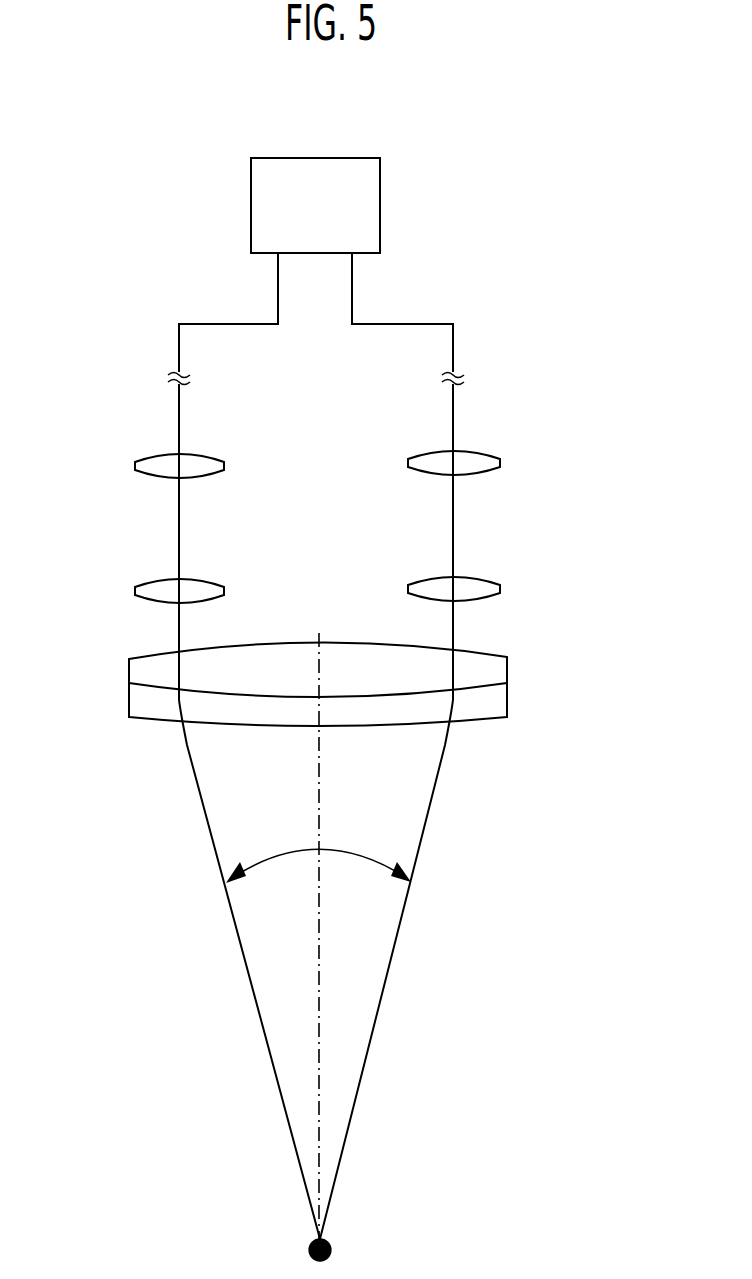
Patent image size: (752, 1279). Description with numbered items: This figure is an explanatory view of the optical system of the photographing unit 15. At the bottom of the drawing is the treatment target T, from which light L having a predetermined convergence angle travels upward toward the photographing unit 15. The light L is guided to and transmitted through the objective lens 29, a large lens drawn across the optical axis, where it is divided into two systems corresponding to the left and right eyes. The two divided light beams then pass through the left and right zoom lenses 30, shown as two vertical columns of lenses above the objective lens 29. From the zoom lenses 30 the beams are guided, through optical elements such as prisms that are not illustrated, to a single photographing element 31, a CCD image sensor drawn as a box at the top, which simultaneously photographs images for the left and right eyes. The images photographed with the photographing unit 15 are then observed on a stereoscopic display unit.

The photographing unit 15 is at (166, 236).
The photographing element 31 is at (380, 203).
The zoom lenses 30 is at (134, 466).
The objective lens 29 is at (507, 668).
The light L is at (267, 1043).
The treatment target T is at (332, 1248).